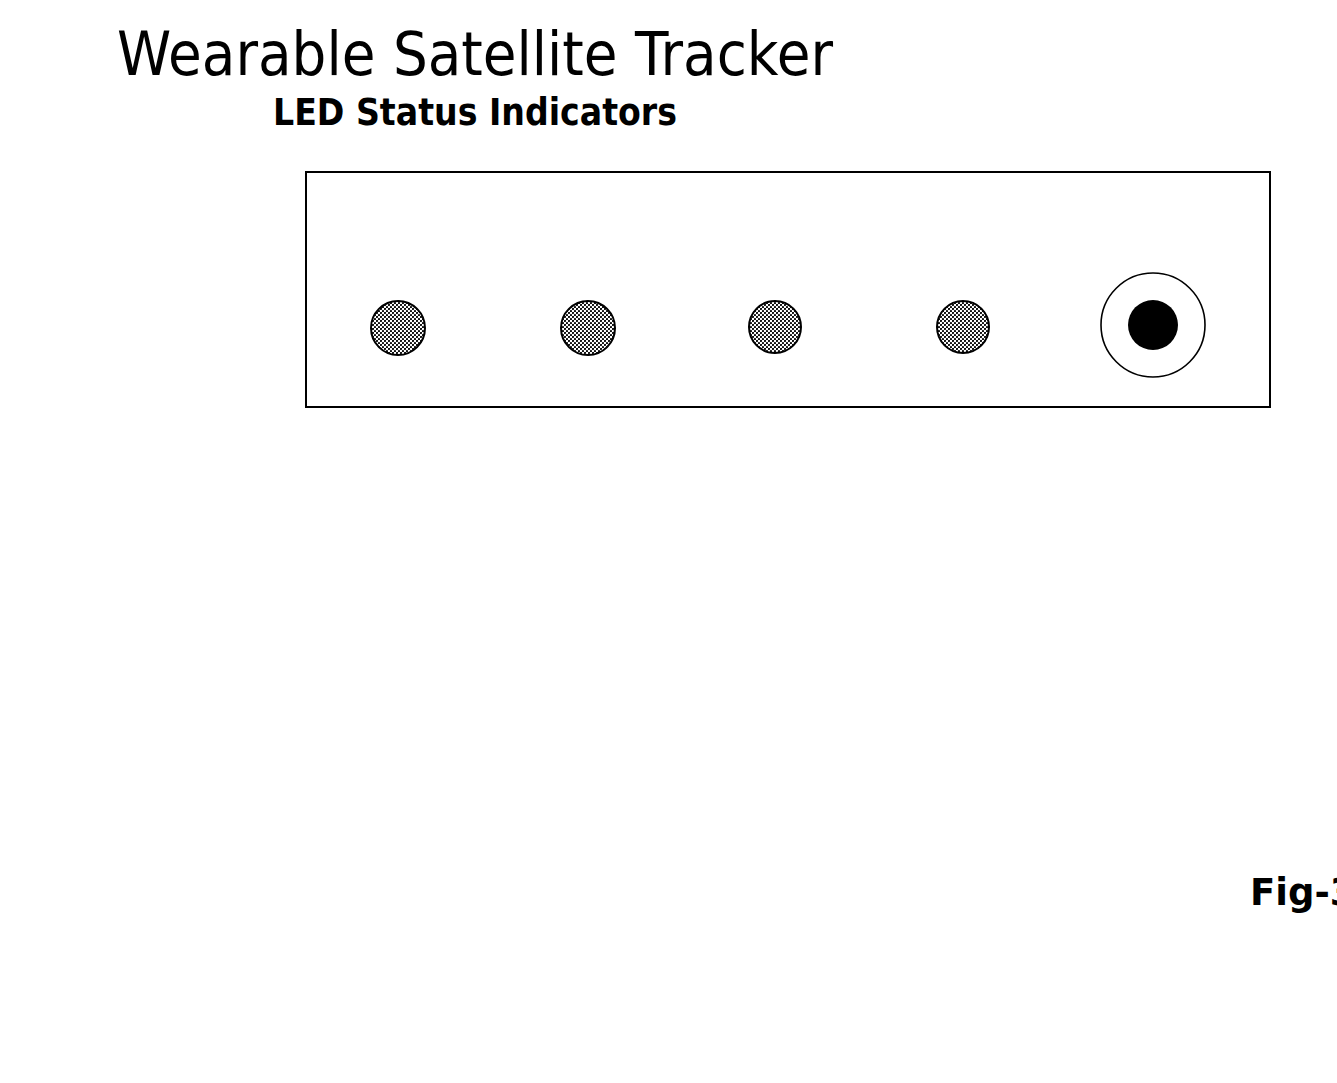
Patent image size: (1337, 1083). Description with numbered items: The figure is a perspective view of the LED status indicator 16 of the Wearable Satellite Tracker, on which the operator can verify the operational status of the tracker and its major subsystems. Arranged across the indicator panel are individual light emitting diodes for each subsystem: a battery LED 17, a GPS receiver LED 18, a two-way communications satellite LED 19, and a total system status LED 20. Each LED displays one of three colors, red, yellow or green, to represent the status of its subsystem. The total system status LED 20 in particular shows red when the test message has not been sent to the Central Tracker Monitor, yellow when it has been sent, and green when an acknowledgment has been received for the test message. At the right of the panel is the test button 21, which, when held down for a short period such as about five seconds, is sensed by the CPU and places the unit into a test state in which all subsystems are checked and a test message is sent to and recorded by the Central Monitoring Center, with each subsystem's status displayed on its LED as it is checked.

The LED status indicator 16 is at (300, 290).
The battery status LED 17 is at (436, 330).
The GPS receiver status LED 18 is at (591, 366).
The two-way communications satellite status LED 19 is at (812, 335).
The total system status LED 20 is at (1002, 329).
The test button 21 is at (1215, 325).